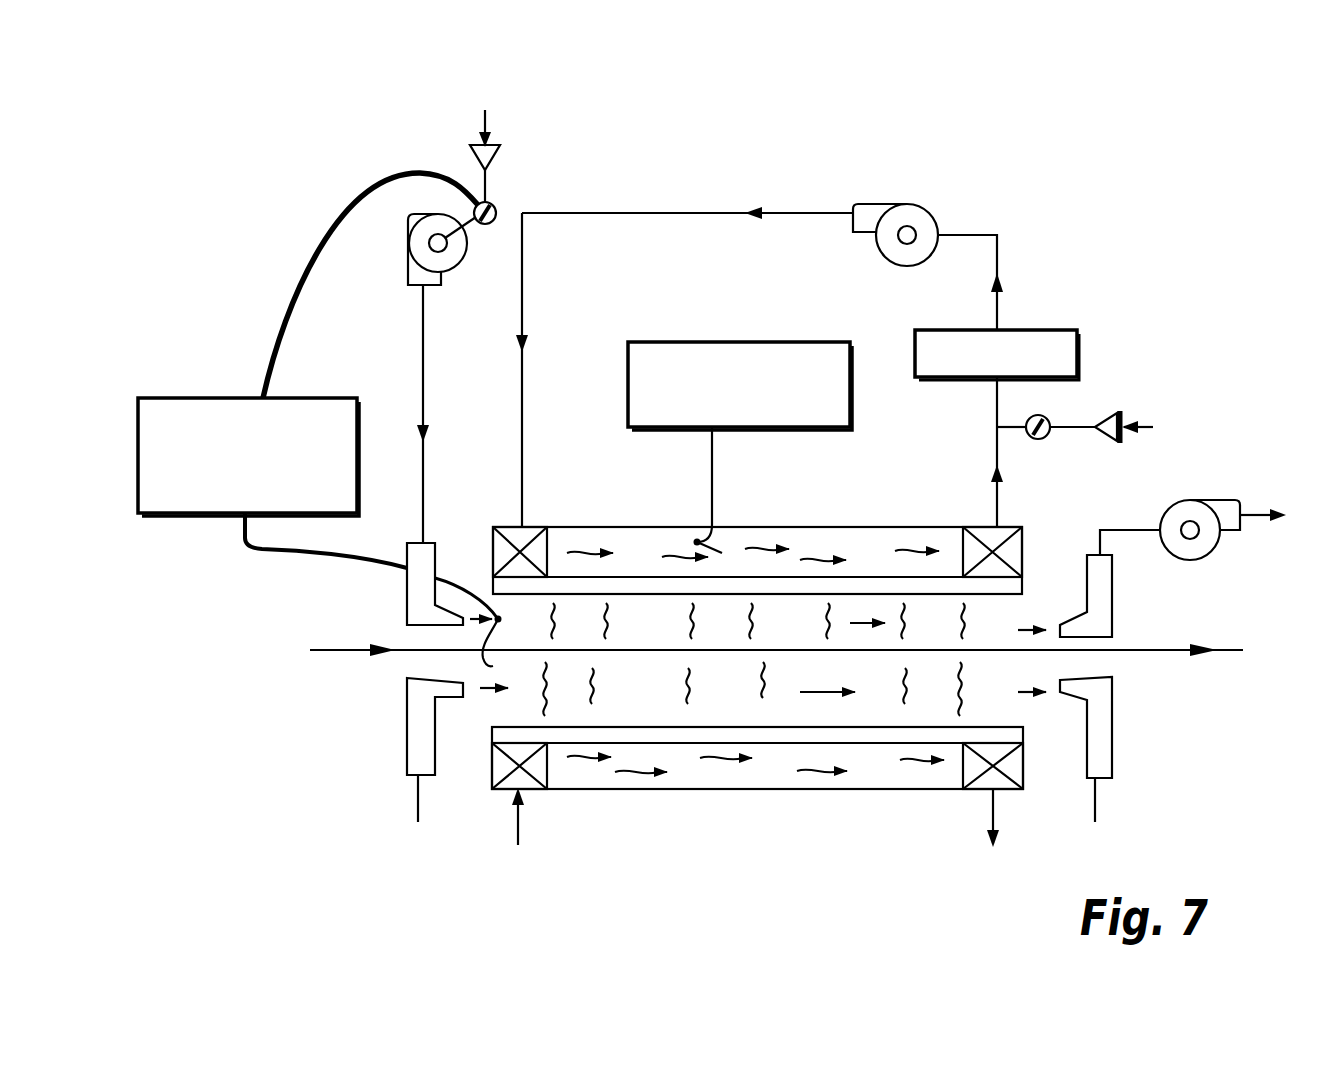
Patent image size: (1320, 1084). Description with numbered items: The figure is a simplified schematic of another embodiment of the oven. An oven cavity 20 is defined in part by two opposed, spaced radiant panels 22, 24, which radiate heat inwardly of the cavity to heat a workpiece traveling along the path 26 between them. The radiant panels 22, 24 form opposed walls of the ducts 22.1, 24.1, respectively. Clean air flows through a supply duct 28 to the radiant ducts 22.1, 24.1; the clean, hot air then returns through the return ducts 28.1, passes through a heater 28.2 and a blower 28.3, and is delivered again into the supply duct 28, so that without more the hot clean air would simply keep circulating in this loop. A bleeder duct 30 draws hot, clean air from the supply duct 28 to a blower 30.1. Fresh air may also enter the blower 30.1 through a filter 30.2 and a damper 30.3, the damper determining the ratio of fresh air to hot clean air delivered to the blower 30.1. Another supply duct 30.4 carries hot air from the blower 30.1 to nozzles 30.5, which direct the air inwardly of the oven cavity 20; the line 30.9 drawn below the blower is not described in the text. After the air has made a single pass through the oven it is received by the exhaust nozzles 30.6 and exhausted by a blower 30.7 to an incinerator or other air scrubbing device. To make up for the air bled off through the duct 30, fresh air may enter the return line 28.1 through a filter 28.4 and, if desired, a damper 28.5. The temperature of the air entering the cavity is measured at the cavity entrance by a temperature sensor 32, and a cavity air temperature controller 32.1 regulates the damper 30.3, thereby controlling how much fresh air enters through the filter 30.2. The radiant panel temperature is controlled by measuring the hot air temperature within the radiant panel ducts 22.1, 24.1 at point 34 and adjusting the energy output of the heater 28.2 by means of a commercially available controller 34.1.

The oven cavity 20 is at (655, 690).
The radiant panel 22 is at (848, 598).
The radiant duct 22.1 is at (651, 542).
The radiant panel 24 is at (858, 723).
The radiant duct 24.1 is at (748, 768).
The path 26 is at (1178, 653).
The supply duct 28 is at (523, 415).
The return duct 28.1 is at (1002, 488).
The heater 28.2 is at (1052, 330).
The blower 28.3 is at (915, 210).
The filter 28.4 is at (1118, 412).
The damper 28.5 is at (1062, 407).
The bleeder duct 30 is at (497, 210).
The blower 30.1 is at (452, 268).
The filter 30.2 is at (492, 152).
The damper 30.3 is at (477, 203).
The supply duct 30.4 is at (418, 803).
The nozzles 30.5 is at (407, 603).
The exhaust nozzles 30.6 is at (1112, 605).
The blower 30.7 is at (1192, 502).
The cavity air supply line 30.9 is at (423, 408).
The temperature sensor 32 is at (501, 651).
The cavity air temperature controller 32.1 is at (200, 397).
The measuring point 34 is at (730, 559).
The controller 34.1 is at (715, 342).